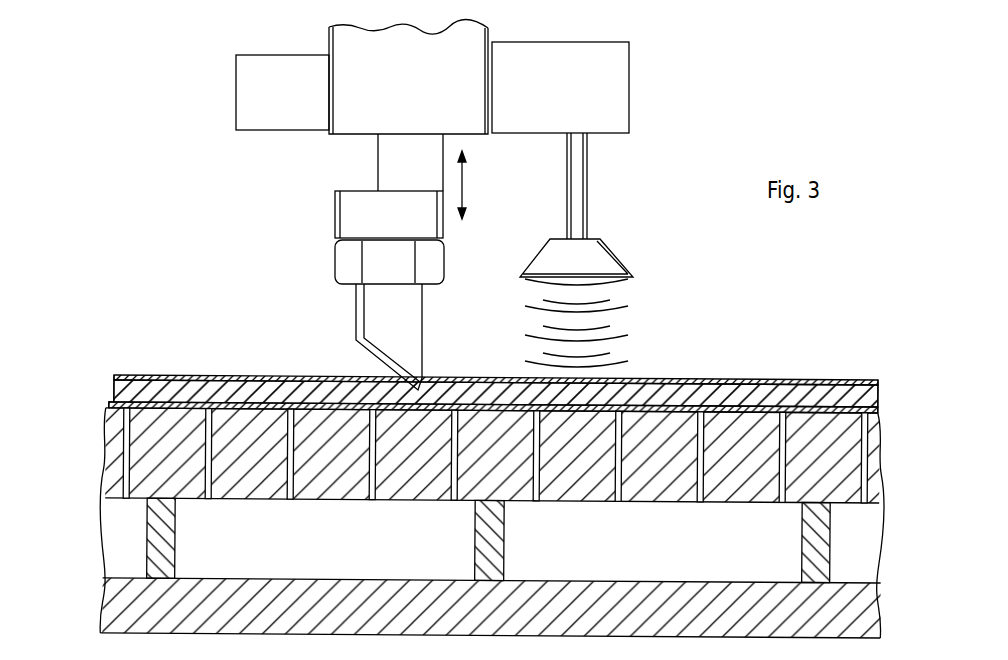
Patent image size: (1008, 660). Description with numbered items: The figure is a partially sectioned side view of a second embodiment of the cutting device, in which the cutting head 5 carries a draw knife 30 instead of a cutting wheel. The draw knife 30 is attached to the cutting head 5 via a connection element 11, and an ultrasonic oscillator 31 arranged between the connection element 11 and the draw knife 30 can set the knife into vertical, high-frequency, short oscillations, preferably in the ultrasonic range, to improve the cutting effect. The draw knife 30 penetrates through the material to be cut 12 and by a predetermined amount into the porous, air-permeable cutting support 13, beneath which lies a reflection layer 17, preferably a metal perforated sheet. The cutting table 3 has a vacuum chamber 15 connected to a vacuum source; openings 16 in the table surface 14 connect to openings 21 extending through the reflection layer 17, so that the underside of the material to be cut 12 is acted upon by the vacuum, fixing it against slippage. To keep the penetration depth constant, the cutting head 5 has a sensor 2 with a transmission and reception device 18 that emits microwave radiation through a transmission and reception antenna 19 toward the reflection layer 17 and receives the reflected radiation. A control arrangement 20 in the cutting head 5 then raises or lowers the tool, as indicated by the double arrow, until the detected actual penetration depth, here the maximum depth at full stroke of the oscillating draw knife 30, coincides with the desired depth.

The sensor 2 is at (632, 196).
The cutting table 3 is at (101, 482).
The cutting head 5 is at (413, 90).
The connection element 11 is at (378, 152).
The material to be cut 12 is at (165, 375).
The cutting support 13 is at (114, 390).
The table surface 14 is at (460, 450).
The vacuum chamber 15 is at (312, 550).
The openings 16 is at (785, 500).
The reflection layer 17 is at (880, 406).
The transmission and reception device 18 is at (610, 88).
The transmission and reception antenna 19 is at (597, 262).
The control arrangement 20 is at (248, 93).
The openings 21 is at (785, 404).
The draw knife 30 is at (368, 316).
The ultrasonic oscillator 31 is at (335, 212).